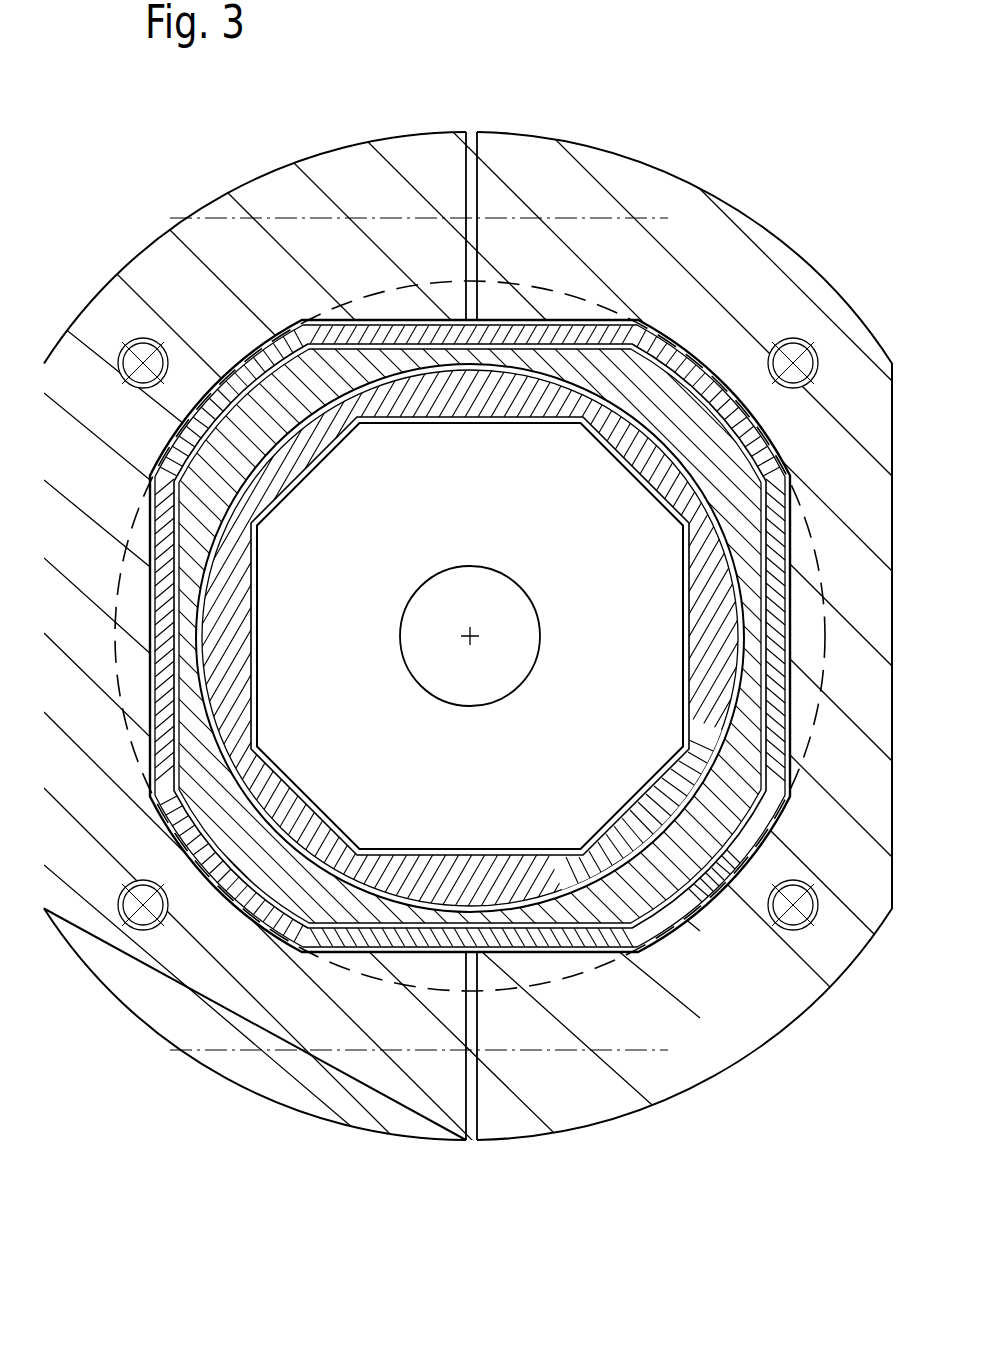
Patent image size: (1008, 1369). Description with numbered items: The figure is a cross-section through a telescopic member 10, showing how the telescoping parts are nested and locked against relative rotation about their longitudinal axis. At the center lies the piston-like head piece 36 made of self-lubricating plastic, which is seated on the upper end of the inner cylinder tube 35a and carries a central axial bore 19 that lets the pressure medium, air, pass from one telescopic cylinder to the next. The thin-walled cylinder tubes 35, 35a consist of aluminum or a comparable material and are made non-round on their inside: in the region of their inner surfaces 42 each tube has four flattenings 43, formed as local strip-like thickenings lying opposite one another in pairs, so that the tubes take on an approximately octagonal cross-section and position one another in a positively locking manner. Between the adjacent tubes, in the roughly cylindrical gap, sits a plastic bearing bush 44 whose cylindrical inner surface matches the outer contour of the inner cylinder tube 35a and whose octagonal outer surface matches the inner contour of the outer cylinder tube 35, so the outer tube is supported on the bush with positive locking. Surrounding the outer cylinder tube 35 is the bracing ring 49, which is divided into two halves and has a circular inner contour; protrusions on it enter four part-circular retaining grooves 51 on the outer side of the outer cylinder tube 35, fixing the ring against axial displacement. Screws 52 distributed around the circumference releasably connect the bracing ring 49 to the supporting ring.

The telescopic member 10 is at (601, 118).
The axial bore 19 is at (501, 598).
The outer cylinder tube 35 is at (770, 440).
The inner cylinder tube 35a is at (636, 412).
The head piece 36 is at (582, 779).
The inner surfaces 42 is at (549, 395).
The flattenings 43 is at (407, 425).
The bearing bush 44 is at (253, 380).
The bracing ring 49 is at (130, 980).
The retaining grooves 51 is at (427, 286).
The screws 52 is at (140, 350).